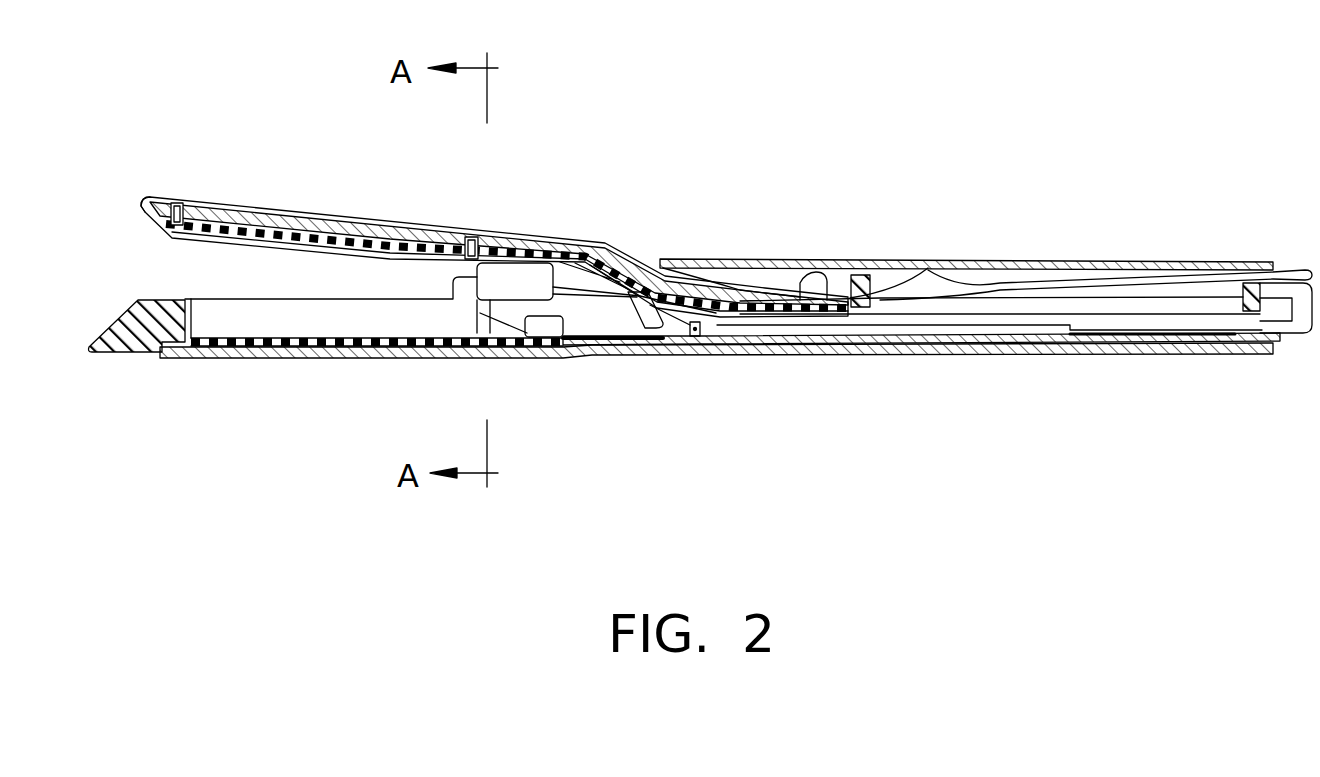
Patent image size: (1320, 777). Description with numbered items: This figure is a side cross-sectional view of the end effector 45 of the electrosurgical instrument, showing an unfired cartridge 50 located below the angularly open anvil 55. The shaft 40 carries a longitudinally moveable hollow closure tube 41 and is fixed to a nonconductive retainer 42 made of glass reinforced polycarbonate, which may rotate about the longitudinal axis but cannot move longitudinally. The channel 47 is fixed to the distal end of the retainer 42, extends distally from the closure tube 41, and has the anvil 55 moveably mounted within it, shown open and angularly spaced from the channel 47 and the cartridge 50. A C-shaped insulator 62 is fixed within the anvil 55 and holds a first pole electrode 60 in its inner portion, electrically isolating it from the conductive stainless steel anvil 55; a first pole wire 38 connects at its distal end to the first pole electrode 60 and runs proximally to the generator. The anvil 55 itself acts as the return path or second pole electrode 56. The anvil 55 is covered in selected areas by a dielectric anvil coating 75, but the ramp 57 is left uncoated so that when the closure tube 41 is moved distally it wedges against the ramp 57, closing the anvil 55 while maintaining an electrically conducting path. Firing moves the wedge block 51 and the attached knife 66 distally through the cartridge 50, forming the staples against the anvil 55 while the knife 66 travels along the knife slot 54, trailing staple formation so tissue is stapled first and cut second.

The end effector 45 is at (108, 214).
The anvil coating 75 is at (268, 207).
The anvil 55 is at (303, 198).
The insulator 62 is at (376, 198).
The second pole electrode 56 is at (440, 232).
The ramp 57 is at (633, 250).
The first pole electrode 60 is at (280, 250).
The shaft 40 is at (797, 258).
The closure tube 41 is at (923, 257).
The first pole wire 38 is at (1057, 275).
The retainer 42 is at (1137, 305).
The cartridge 50 is at (125, 318).
The knife slot 54 is at (310, 329).
The channel 47 is at (400, 360).
The wedge block 51 is at (543, 333).
The knife 66 is at (697, 323).